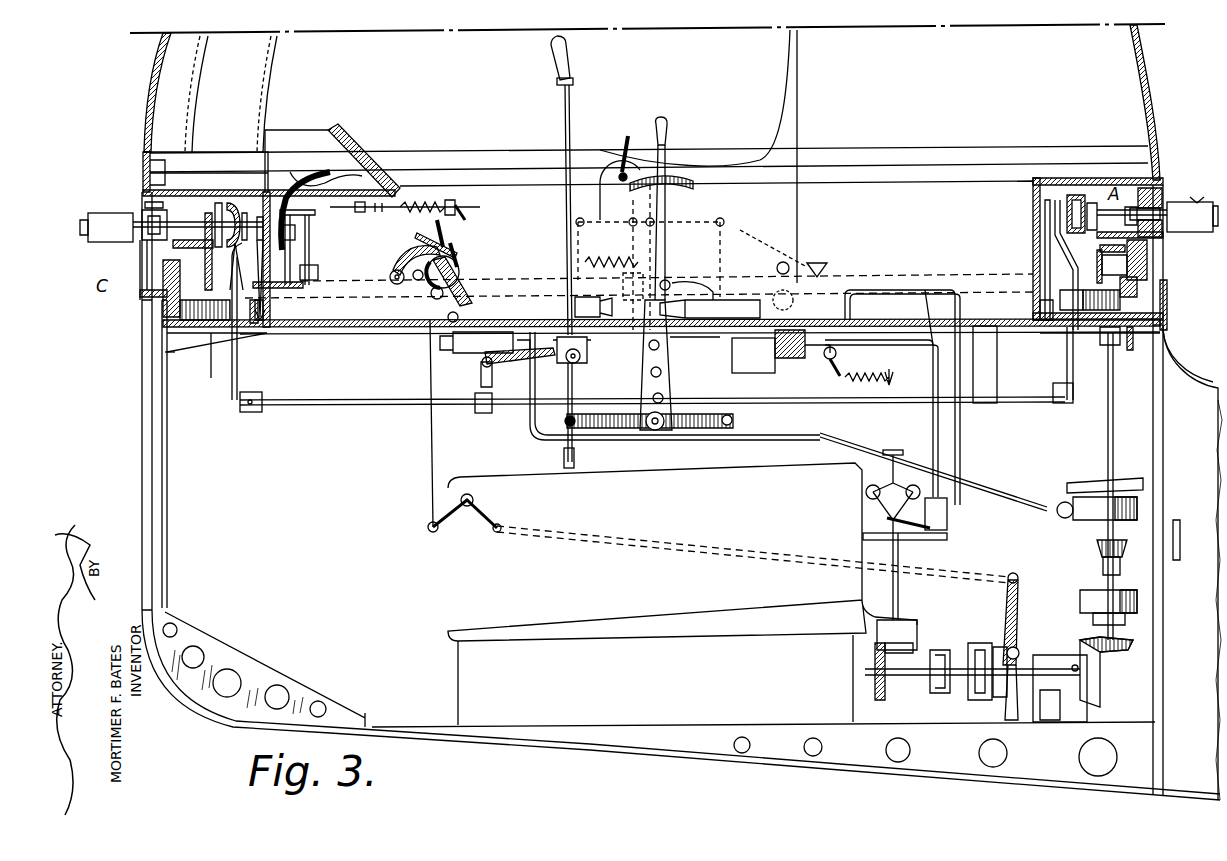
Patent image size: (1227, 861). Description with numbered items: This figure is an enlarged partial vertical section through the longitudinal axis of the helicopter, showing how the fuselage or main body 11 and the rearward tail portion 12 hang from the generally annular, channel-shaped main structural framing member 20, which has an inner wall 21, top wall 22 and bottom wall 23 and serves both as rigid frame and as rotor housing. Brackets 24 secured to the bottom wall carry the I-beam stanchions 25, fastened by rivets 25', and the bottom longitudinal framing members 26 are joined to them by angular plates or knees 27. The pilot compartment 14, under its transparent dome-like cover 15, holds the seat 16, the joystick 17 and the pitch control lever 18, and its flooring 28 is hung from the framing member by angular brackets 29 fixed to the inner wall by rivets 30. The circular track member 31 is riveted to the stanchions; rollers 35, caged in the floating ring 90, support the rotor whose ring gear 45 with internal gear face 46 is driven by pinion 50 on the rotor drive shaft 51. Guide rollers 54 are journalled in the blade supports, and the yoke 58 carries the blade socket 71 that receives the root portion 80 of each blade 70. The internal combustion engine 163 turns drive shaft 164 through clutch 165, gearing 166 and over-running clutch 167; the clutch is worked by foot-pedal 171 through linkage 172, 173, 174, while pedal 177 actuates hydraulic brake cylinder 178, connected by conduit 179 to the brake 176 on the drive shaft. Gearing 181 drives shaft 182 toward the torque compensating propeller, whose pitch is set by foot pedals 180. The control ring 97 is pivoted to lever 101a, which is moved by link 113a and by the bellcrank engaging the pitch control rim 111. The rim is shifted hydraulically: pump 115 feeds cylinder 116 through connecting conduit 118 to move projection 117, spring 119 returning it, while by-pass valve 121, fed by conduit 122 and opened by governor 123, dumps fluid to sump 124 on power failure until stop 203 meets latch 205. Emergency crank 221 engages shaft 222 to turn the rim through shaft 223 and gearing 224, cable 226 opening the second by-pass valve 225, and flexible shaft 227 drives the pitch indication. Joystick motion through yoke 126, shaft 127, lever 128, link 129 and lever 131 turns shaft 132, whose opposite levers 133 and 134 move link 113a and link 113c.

The fuselage or main body portion 11 is at (145, 390).
The tail portion 12 is at (1205, 392).
The pilot compartment 14 is at (495, 84).
The transparent dome-like cover 15 is at (1154, 100).
The seat 16 is at (815, 75).
The joystick 17 is at (570, 96).
The pitch control lever 18 is at (672, 132).
The main structural framing member 20 is at (180, 207).
The inner wall 21 is at (267, 182).
The top wall 22 is at (1050, 178).
The bottom wall 23 is at (192, 333).
The brackets 24 is at (212, 340).
The stanchions or vertical ribs 25 is at (649, 490).
The rivets 25' is at (136, 357).
The bottom longitudinal framing members 26 is at (540, 742).
The angular plates or knees 27 is at (262, 668).
The flooring 28 is at (965, 283).
The angular brackets 29 is at (275, 311).
The rivets 30 is at (290, 322).
The channel-shaped member 31 is at (1100, 178).
The rollers 35 is at (1150, 272).
The ring gear 45 is at (165, 312).
The internal gear face 46 is at (1140, 306).
The pinion 50 is at (1112, 347).
The rotor drive shaft 51 is at (1113, 425).
The guide rollers 54 is at (1097, 262).
The blade-mounting support, yoke or ring member 58 is at (139, 204).
The rotor blades 70 is at (1212, 217).
The blade socket 71 is at (1194, 190).
The root portion 80 is at (1170, 232).
The floating ring 90 is at (163, 275).
The channel shaft control ring 97 is at (1064, 195).
The lever 101a is at (1048, 200).
The circular pitch control rim 111 is at (930, 272).
The link 113a is at (1066, 356).
The link 113c is at (240, 357).
The pump 115 is at (740, 288).
The hydraulic cylinder 116 is at (560, 282).
The projection 117 is at (642, 365).
The connecting conduit 118 is at (675, 386).
The spring 119 is at (575, 250).
The by-pass valve 121 is at (950, 524).
The conduit 122 is at (932, 428).
The governor 123 is at (855, 480).
The sump 124 is at (752, 370).
The yoke 126 is at (582, 347).
The rotatable shaft 127 is at (583, 376).
The lever 128 is at (560, 370).
The link 129 is at (480, 384).
The lever 131 is at (483, 415).
The shaft 132 is at (358, 408).
The lever 133 is at (1057, 388).
The lever 134 is at (245, 416).
The internal combustion engine 163 is at (682, 552).
The drive shaft 164 is at (920, 660).
The clutch 165 is at (960, 692).
The gearing 166 is at (1105, 670).
The over-running clutch 167 is at (1085, 598).
The foot-pedal 171 is at (392, 270).
The linkage 172 is at (434, 452).
The linkage 173 is at (490, 513).
The linkage 174 is at (652, 545).
The brake 176 is at (1085, 492).
The pedal 177 is at (462, 245).
The hydraulic brake cylinder 178 is at (480, 358).
The conduit 179 is at (985, 480).
The foot pedals 180 is at (470, 278).
The gearing 181 is at (1095, 550).
The shaft 182 is at (1200, 545).
The stop 203 is at (818, 257).
The latch 205 is at (808, 258).
The emergency pitch control crank 221 is at (450, 200).
The shaft 222 is at (345, 222).
The shaft 223 is at (305, 245).
The gearing 224 is at (303, 286).
The second by-pass valve 225 is at (840, 318).
The flexible cable 226 is at (372, 150).
The flexible shaft 227 is at (310, 184).